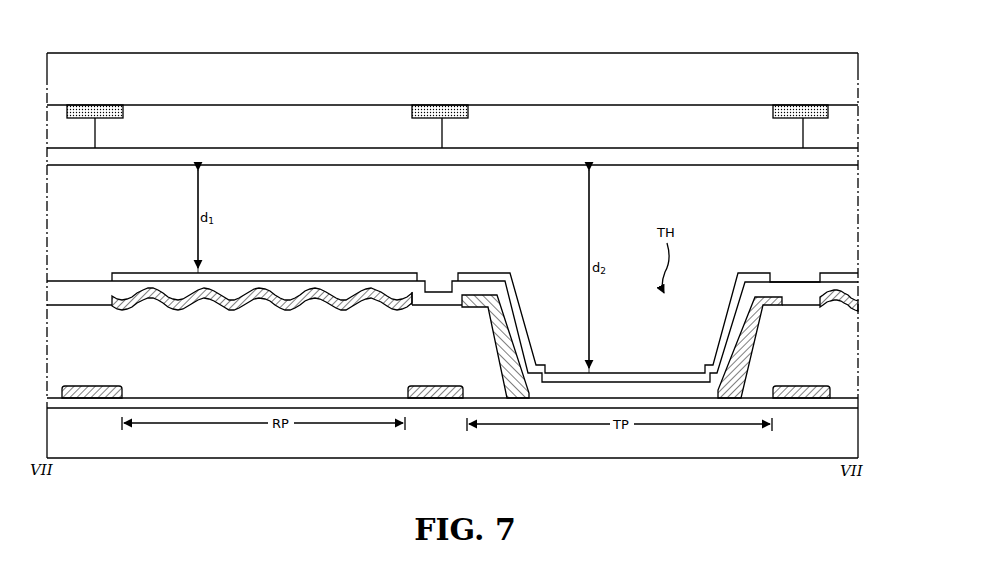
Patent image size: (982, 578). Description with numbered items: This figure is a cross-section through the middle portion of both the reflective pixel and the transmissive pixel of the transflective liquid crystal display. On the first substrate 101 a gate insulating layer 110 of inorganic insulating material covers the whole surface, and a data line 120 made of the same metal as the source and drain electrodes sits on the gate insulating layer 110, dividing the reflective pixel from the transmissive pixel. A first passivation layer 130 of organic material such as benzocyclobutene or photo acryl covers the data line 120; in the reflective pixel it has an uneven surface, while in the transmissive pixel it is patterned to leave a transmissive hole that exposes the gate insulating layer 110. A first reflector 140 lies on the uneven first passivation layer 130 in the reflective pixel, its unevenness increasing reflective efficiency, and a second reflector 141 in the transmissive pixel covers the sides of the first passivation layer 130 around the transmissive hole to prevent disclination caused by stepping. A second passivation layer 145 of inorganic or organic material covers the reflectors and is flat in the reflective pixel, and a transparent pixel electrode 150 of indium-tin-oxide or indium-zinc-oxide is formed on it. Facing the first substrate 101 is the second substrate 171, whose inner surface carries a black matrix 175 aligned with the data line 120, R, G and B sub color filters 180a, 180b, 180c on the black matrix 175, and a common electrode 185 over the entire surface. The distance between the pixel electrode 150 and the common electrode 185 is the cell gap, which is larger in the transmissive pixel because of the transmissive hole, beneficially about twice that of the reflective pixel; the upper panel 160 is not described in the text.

The first substrate 101 is at (447, 450).
The gate insulating layer 110 is at (320, 398).
The data line 120 is at (92, 386).
The first passivation layer 130 is at (235, 322).
The first reflector 140 is at (370, 290).
The second reflector 141 is at (500, 322).
The second passivation layer 145 is at (333, 288).
The pixel electrode 150 is at (293, 277).
The upper substrate 160 is at (849, 208).
The second substrate 171 is at (497, 78).
The black matrix 175 is at (89, 112).
The R sub color filter 180a is at (58, 120).
The G sub color filter 180b is at (247, 125).
The B sub color filter 180c is at (604, 130).
The common electrode 185 is at (638, 167).